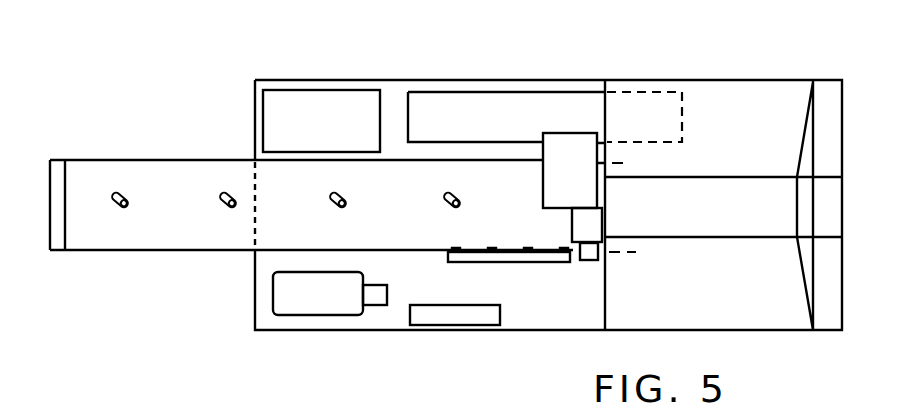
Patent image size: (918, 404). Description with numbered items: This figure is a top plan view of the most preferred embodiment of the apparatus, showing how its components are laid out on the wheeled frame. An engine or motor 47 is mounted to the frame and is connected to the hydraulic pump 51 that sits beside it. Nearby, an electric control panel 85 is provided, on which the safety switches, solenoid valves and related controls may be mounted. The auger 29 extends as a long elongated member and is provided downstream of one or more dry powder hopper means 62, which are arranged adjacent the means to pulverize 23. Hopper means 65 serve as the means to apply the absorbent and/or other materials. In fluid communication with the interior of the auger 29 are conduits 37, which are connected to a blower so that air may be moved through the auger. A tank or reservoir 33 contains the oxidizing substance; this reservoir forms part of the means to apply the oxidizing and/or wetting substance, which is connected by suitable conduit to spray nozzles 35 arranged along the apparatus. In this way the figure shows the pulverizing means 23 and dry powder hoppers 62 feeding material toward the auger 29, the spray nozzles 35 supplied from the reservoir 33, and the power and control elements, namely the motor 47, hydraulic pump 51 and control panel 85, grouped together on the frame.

The auger 29 is at (184, 130).
The tank or reservoir 33 is at (300, 92).
The conduits 37 is at (222, 198).
The hopper means 65 is at (563, 135).
The dry powder hopper means 62 is at (717, 90).
The means to pulverize 23 is at (590, 262).
The spray nozzles 35 is at (506, 263).
The electric control panel 85 is at (507, 318).
The engine or motor 47 is at (302, 316).
The hydraulic pump 51 is at (378, 307).